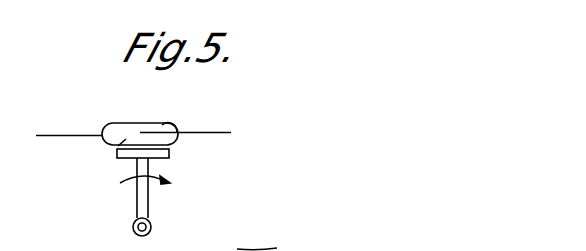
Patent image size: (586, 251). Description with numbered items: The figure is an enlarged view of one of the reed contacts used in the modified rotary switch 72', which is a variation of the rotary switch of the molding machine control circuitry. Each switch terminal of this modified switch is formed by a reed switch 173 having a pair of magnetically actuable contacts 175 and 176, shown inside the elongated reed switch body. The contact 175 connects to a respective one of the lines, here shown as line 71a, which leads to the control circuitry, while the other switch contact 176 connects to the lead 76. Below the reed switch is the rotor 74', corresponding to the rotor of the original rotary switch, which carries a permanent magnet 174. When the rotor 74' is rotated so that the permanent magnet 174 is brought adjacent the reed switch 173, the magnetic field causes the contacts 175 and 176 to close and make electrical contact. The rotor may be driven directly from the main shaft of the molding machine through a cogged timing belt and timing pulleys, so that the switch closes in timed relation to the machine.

The line 71a is at (232, 132).
The lead 76 is at (53, 134).
The reed switch 173 is at (122, 123).
The magnetically actuable contact 175 is at (168, 125).
The magnetically actuable contact 176 is at (118, 146).
The rotary switch 72' is at (180, 156).
The permanent magnet 174 is at (158, 158).
The rotor 74' is at (116, 219).